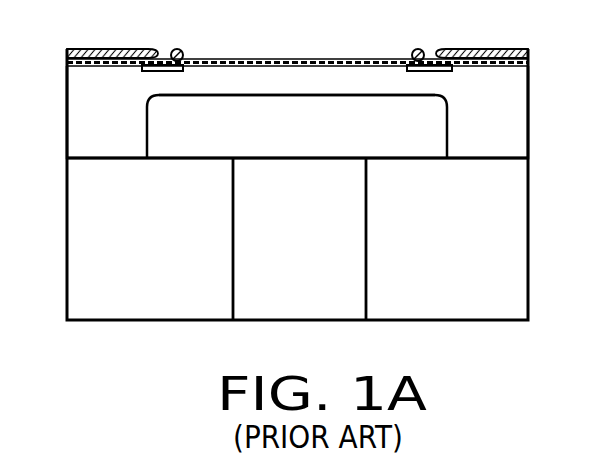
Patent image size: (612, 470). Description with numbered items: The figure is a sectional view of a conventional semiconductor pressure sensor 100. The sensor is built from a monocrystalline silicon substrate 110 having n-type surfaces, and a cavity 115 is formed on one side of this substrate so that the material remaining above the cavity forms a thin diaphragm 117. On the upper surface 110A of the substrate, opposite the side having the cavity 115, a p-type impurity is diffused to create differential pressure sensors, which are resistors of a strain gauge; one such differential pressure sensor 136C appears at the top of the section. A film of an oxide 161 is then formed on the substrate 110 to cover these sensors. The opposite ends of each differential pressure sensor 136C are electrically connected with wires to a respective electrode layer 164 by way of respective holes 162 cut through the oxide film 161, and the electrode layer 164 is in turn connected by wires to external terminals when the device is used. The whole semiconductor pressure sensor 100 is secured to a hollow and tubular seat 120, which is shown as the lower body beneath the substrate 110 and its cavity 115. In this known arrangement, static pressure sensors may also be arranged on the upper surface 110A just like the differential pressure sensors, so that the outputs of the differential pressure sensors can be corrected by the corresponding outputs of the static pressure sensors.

The semiconductor pressure sensor 100 is at (67, 118).
The monocrystalline silicon substrate 110 is at (528, 92).
The upper surface 110A is at (77, 48).
The cavity 115 is at (437, 134).
The thin diaphragm 117 is at (347, 98).
The hollow and tubular seat 120 is at (528, 215).
The differential pressure sensor 136C is at (158, 58).
The oxide film 161 is at (297, 58).
The hole 162 is at (185, 53).
The electrode layer 164 is at (507, 49).